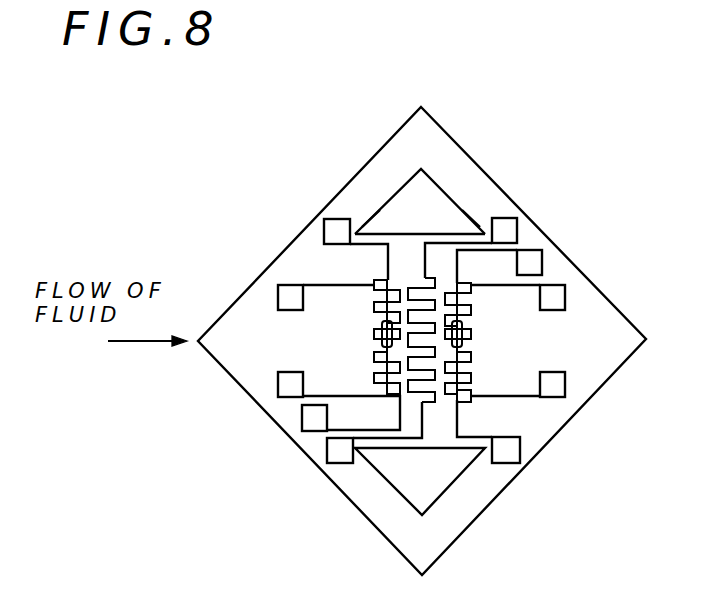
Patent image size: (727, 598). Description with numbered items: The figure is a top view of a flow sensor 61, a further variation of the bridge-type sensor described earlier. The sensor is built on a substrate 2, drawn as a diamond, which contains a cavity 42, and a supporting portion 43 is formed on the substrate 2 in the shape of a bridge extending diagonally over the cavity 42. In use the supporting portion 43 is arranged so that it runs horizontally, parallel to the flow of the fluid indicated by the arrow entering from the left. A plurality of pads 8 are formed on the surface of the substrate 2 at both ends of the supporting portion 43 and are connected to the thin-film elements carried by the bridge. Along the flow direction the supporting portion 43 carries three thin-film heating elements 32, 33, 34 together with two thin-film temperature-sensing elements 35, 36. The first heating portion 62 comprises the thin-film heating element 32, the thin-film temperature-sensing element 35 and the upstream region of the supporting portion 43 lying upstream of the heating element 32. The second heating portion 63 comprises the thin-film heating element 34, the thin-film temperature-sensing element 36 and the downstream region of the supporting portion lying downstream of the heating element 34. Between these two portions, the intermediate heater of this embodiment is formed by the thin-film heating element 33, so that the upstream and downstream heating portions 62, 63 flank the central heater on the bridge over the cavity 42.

The substrate 2 is at (607, 328).
The pads 8 is at (325, 460).
The thin-film heating element 32 is at (374, 360).
The thin-film heating element 33 is at (440, 380).
The thin-film heating element 34 is at (471, 374).
The thin-film temperature-sensing element 35 is at (376, 326).
The thin-film temperature-sensing element 36 is at (471, 333).
The cavity 42 is at (428, 195).
The supporting portion 43 is at (402, 233).
The flow sensor 61 is at (562, 208).
The first heating portion 62 is at (373, 220).
The second heating portion 63 is at (458, 225).